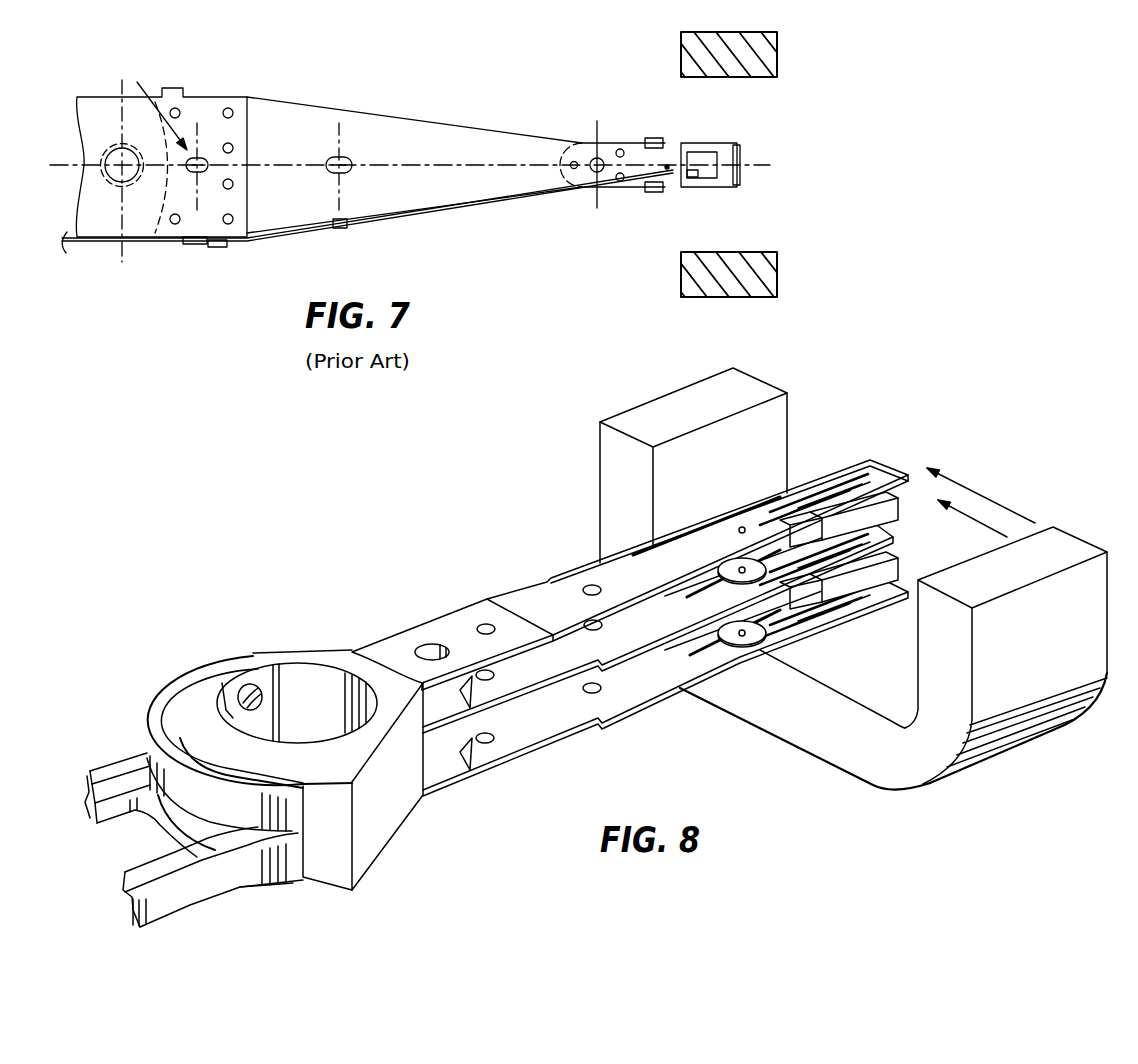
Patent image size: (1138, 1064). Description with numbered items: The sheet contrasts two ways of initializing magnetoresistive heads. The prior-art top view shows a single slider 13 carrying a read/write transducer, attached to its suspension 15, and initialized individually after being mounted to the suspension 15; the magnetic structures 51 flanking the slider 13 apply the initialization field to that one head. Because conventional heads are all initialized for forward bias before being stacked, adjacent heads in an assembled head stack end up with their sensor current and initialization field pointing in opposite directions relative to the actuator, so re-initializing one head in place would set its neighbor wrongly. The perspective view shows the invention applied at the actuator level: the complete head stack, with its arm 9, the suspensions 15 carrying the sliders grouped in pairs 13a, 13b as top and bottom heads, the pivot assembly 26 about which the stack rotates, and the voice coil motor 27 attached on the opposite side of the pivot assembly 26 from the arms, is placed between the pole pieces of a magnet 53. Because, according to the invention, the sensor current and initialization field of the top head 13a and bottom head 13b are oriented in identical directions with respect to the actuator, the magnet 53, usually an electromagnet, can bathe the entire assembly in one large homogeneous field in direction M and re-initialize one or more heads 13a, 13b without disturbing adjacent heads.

In FIG. 7, the actuator arm 9 is at (85, 96).
In FIG. 8, the actuator arm 9 is at (447, 611).
In FIG. 7, the suspension 15 is at (356, 104).
In FIG. 8, the suspension 15 is at (568, 572).
In FIG. 7, the slider 13 is at (711, 189).
In FIG. 8, the top head slider 13a is at (892, 493).
In FIG. 8, the bottom head slider 13b is at (903, 524).
In FIG. 8, the pivot assembly 26 is at (226, 665).
In FIG. 8, the voice coil motor 27 is at (205, 903).
In FIG. 7, the prior art magnets 51 is at (757, 84).
In FIG. 8, the magnet 53 is at (790, 437).
In FIG. 8, the magnetization direction M is at (978, 496).